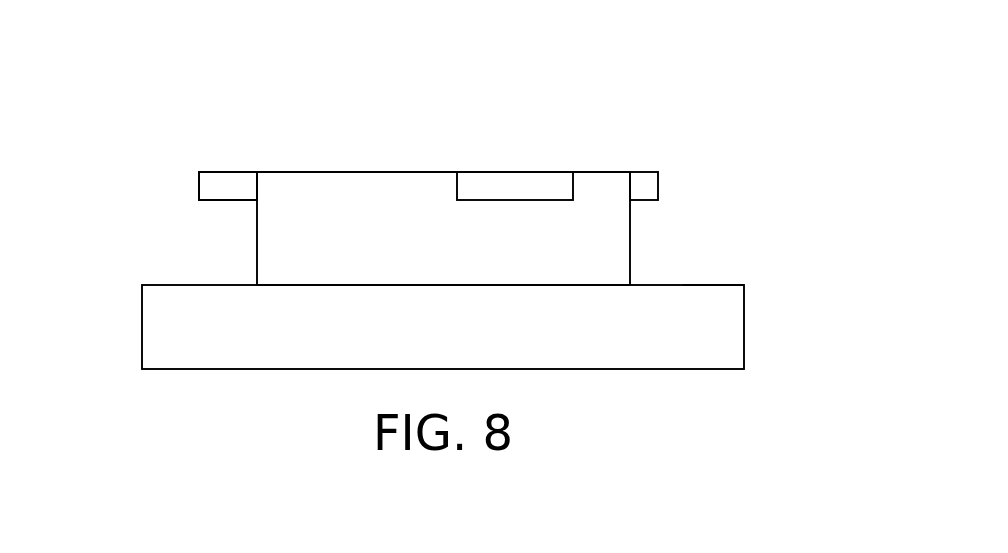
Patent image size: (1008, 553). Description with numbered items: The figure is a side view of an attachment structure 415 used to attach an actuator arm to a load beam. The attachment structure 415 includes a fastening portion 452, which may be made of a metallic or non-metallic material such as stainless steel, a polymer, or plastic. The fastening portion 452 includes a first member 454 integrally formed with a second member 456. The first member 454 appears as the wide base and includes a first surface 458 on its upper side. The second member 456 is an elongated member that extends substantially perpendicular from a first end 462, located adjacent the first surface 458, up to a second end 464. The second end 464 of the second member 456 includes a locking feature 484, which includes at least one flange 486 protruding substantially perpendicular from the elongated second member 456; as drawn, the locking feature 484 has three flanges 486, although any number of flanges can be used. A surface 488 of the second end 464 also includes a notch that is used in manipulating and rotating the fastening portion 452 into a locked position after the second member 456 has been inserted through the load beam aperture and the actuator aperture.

The attachment structure 415 is at (467, 195).
The fastening portion 452 is at (142, 312).
The first member 454 is at (680, 327).
The second member 456 is at (594, 247).
The first surface 458 is at (683, 285).
The first end 462 is at (413, 286).
The second end 464 is at (415, 172).
The locking feature 484 is at (186, 188).
The flange 486 is at (225, 183).
The surface 488 is at (290, 173).